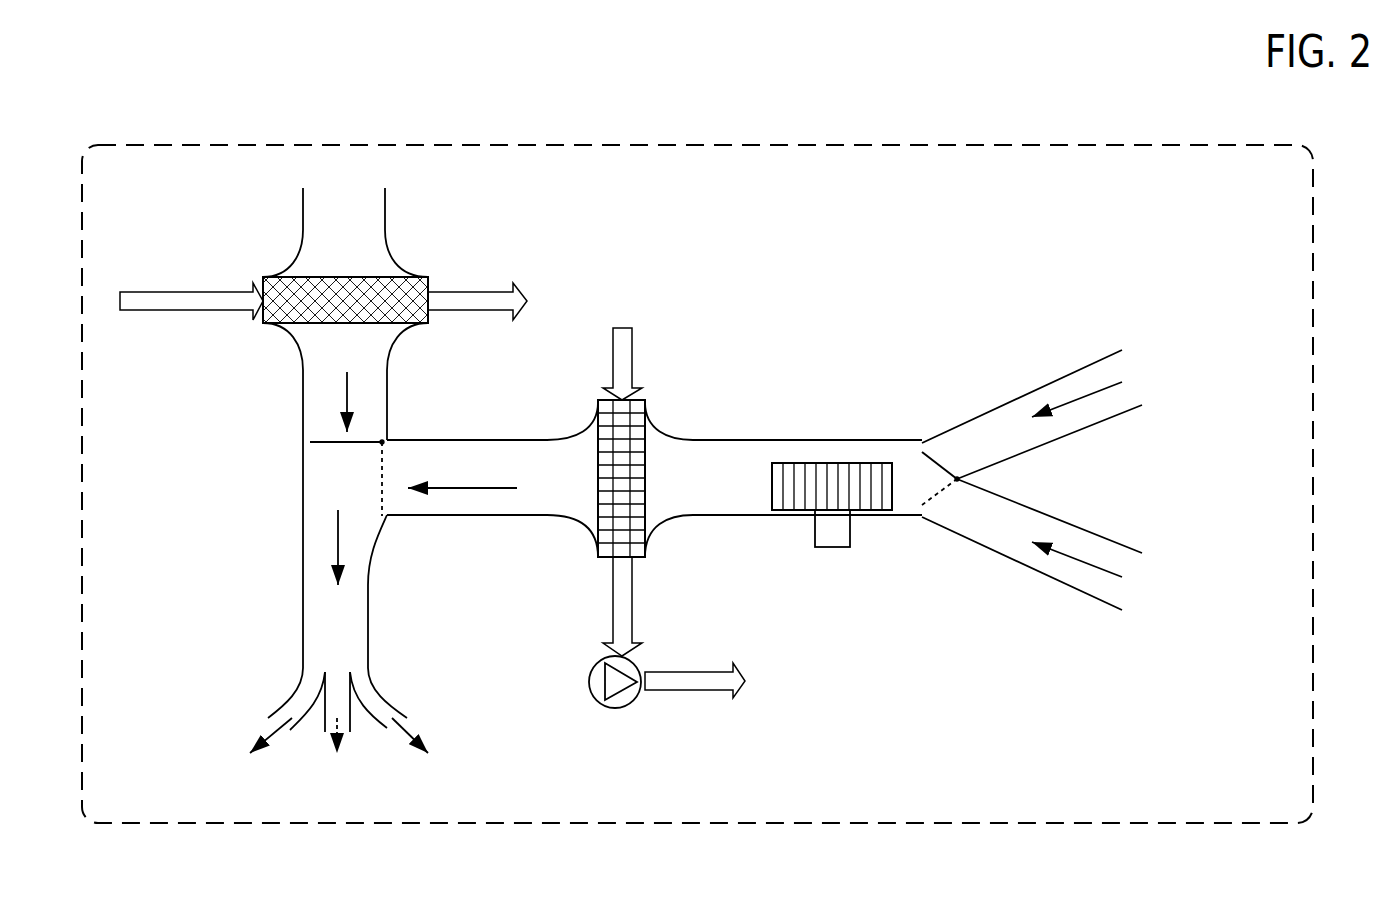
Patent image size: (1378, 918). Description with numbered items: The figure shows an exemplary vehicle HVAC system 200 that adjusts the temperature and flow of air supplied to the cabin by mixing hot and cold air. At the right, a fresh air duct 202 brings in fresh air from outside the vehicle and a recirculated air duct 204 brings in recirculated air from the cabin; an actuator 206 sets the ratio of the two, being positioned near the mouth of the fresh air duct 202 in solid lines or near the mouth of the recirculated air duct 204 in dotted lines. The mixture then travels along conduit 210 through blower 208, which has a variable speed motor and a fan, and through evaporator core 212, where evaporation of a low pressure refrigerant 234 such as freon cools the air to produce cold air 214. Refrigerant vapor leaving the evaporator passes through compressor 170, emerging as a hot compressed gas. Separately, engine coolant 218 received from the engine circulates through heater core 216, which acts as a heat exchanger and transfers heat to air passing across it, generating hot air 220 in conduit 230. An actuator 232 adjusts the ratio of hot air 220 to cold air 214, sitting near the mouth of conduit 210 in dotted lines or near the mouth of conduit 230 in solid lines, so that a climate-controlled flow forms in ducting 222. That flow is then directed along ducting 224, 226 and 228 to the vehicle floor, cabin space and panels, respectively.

The HVAC system 200 is at (1095, 145).
The fresh air duct 202 is at (1077, 370).
The recirculated air duct 204 is at (1048, 577).
The actuator 206 is at (945, 472).
The blower 208 is at (790, 512).
The conduit 210 is at (735, 442).
The evaporator core 212 is at (637, 407).
The cold air 214 is at (460, 489).
The heater core 216 is at (310, 277).
The engine coolant 218 is at (193, 312).
The hot air 220 is at (350, 400).
The ducting 222 is at (370, 612).
The ducting 224 is at (293, 697).
The ducting 226 is at (337, 680).
The ducting 228 is at (382, 695).
The conduit 230 is at (303, 393).
The actuator 232 is at (330, 443).
The refrigerant 234 is at (638, 340).
The compressor 170 is at (638, 662).